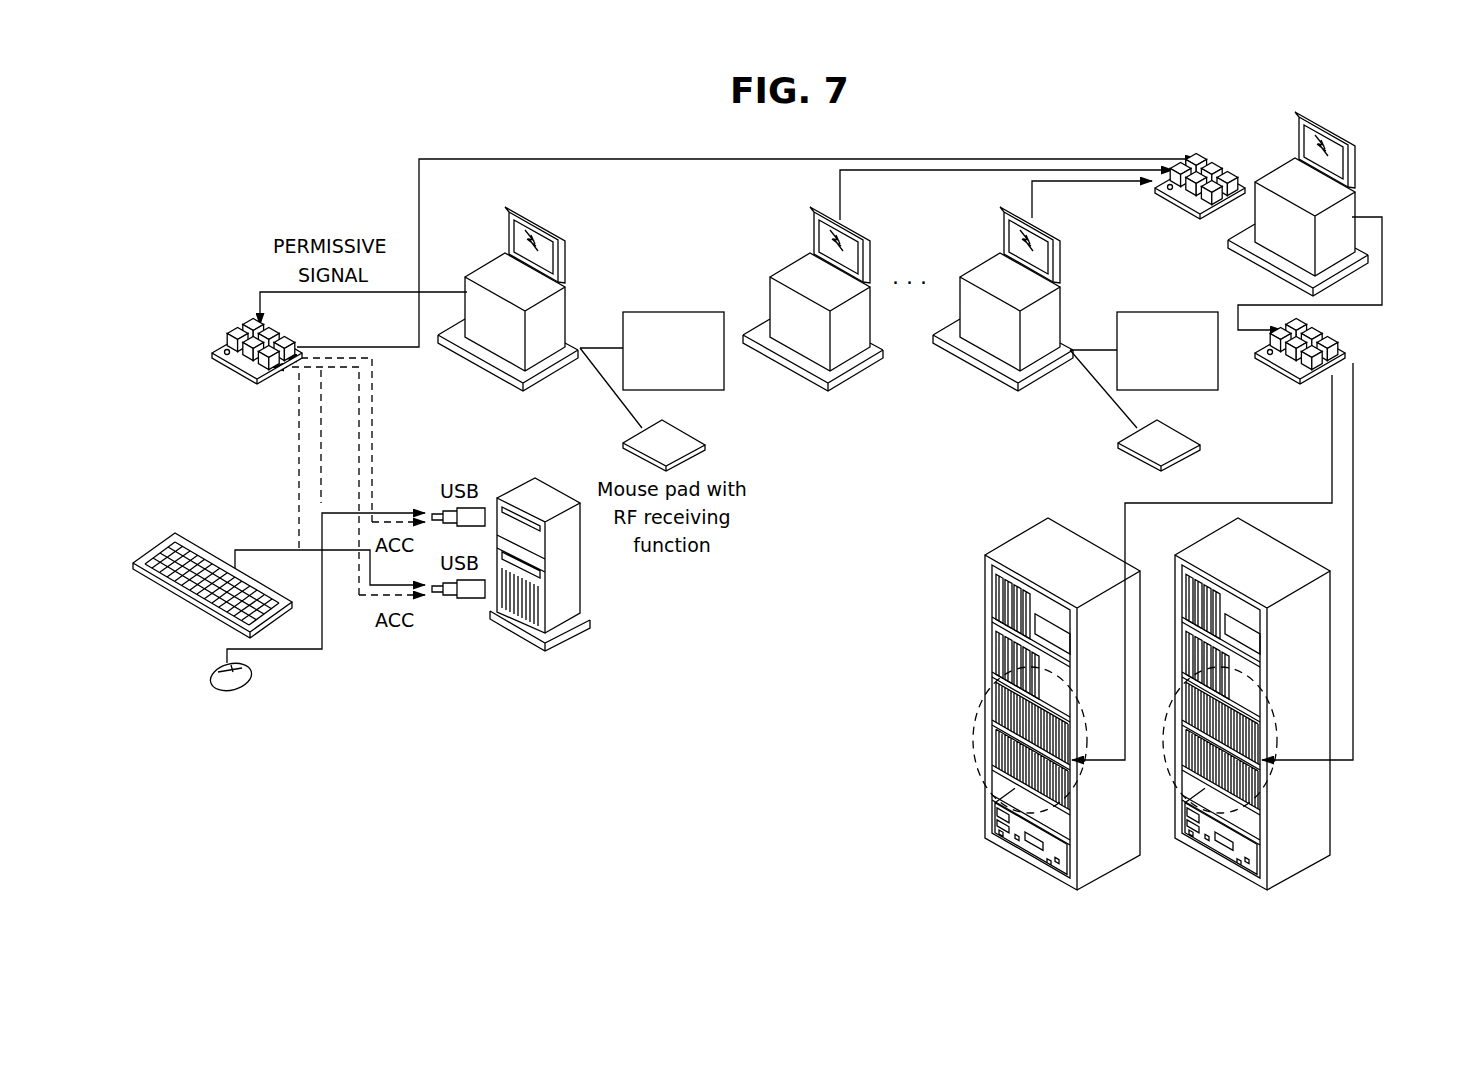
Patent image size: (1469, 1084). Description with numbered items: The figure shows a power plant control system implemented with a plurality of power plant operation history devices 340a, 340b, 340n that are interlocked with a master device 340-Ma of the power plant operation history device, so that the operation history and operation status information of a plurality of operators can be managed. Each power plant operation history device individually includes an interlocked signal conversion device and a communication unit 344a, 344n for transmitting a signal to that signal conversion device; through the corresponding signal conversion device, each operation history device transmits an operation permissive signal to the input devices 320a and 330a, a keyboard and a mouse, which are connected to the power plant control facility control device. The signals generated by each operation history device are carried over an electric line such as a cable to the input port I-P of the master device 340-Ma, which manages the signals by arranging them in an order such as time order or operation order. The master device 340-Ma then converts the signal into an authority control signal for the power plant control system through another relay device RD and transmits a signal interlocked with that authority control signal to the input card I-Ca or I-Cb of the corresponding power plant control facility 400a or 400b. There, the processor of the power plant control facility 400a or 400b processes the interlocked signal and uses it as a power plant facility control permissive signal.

The communication unit 344a is at (245, 333).
The power plant operation history device 340a is at (555, 230).
The power plant operation history device 340b is at (858, 230).
The power plant operation history device 340n is at (1050, 230).
The communication unit 344n is at (1162, 311).
The input port I-P is at (1222, 157).
The master device 340-Ma is at (1330, 127).
The relay device RD is at (1347, 345).
The input device 320a is at (203, 547).
The input device 330a is at (217, 667).
The power plant control facility 400a is at (1107, 873).
The power plant control facility 400b is at (1297, 873).
The input card I-Ca is at (1025, 800).
The input card I-Cb is at (1215, 800).